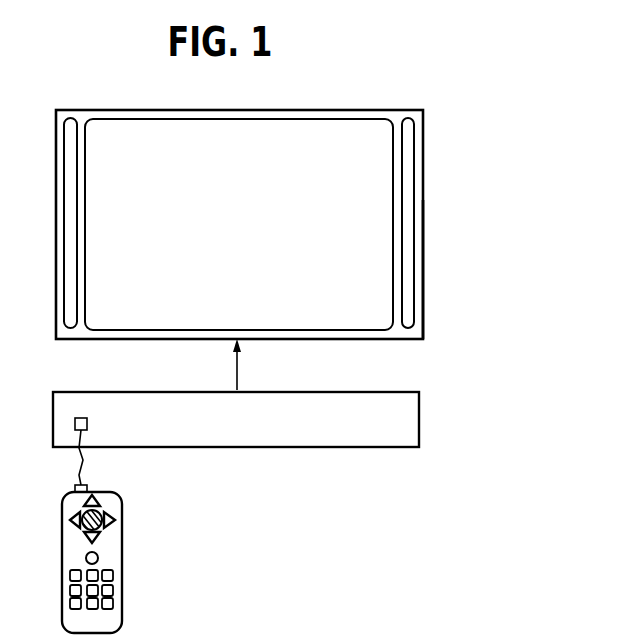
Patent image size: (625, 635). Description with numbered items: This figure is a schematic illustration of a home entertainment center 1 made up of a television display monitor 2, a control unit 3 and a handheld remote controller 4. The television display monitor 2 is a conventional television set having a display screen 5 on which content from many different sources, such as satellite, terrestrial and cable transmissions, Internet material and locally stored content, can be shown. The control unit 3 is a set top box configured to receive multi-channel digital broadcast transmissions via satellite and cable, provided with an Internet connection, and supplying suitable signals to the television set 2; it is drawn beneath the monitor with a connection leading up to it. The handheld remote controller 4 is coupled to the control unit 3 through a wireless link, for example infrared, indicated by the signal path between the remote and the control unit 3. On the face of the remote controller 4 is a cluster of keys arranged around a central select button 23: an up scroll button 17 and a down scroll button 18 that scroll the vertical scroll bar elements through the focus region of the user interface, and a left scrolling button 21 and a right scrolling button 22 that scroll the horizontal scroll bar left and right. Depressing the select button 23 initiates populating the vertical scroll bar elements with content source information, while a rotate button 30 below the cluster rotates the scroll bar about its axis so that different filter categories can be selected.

The home entertainment center 1 is at (437, 186).
The television display monitor 2 is at (422, 284).
The control unit 3 is at (420, 400).
The handheld remote controller 4 is at (122, 604).
The display screen 5 is at (393, 230).
The up scroll button 17 is at (97, 498).
The down scroll button 18 is at (97, 538).
The left scrolling button 21 is at (65, 519).
The right scrolling button 22 is at (118, 519).
The select button 23 is at (88, 528).
The rotate button 30 is at (86, 559).